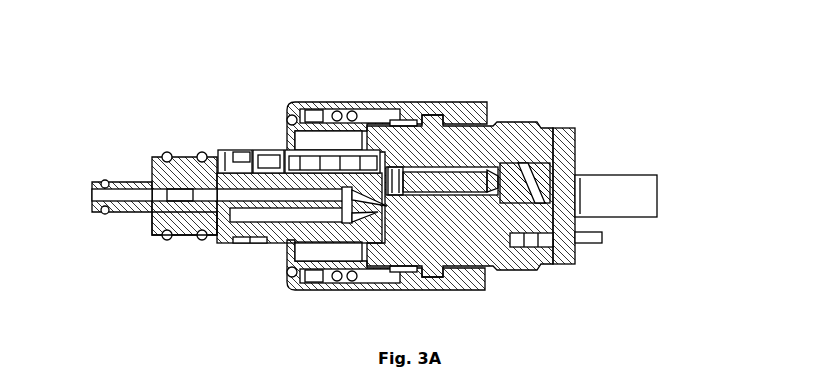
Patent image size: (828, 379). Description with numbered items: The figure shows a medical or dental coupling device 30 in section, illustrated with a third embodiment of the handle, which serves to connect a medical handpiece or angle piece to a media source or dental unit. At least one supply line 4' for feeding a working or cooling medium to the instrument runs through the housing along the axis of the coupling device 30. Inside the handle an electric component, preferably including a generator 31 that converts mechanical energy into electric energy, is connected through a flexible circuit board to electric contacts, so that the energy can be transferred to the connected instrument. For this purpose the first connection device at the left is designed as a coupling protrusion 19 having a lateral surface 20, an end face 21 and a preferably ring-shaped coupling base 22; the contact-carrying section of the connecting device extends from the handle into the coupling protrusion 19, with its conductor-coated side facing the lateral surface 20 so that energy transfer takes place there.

The coupling device 30 is at (596, 62).
The generator 31 is at (495, 140).
The supply line 4' is at (286, 239).
The coupling base 22 is at (357, 247).
The coupling protrusion 19 is at (163, 170).
The lateral surface 20 is at (184, 155).
The end face 21 is at (92, 192).